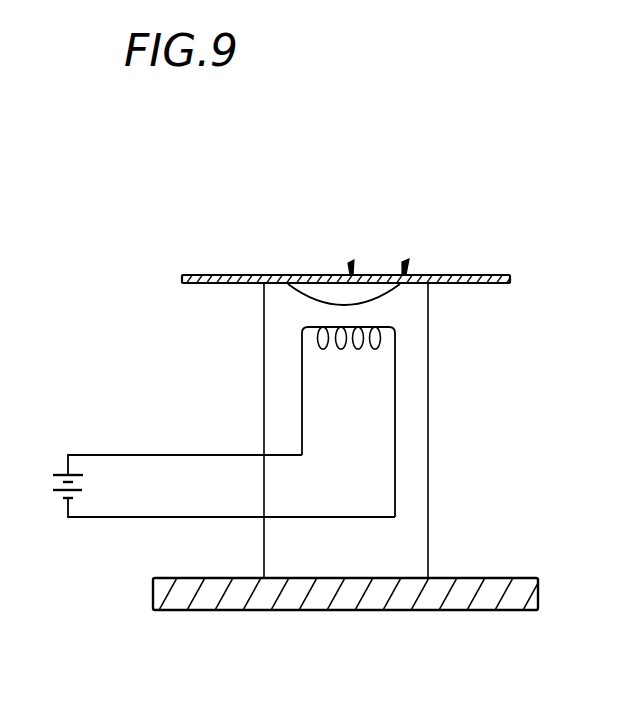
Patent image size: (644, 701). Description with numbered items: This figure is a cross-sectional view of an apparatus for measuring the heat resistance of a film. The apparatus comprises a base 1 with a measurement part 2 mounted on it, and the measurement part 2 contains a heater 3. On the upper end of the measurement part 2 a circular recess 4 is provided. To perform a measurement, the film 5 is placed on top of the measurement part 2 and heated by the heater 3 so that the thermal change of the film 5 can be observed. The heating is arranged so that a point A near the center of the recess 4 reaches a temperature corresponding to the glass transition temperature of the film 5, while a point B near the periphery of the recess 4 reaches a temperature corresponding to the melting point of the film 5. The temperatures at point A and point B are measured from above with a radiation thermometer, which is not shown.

The base 1 is at (340, 610).
The measurement part 2 is at (263, 360).
The heater 3 is at (370, 329).
The circular recess 4 is at (330, 304).
The film 5 is at (234, 275).
The point A is at (352, 261).
The point B is at (406, 261).